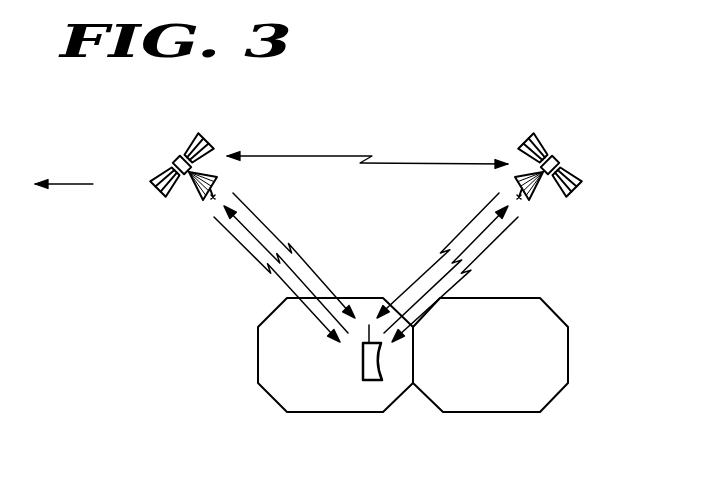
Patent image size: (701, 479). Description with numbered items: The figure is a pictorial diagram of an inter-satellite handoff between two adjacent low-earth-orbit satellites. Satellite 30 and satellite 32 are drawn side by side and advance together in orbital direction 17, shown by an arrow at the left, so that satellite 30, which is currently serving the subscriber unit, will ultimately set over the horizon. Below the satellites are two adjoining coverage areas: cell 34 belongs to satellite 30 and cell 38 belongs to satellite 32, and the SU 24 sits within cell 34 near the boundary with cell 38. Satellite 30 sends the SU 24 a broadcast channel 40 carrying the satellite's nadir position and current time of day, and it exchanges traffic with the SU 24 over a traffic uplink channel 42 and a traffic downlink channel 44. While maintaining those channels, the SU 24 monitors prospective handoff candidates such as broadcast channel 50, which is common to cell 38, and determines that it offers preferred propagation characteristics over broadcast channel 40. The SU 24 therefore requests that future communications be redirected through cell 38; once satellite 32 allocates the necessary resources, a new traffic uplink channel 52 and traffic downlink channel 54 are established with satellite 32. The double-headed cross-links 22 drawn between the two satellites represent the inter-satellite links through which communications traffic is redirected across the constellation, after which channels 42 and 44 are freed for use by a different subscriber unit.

The orbital direction 17 is at (73, 184).
The cross-links 22 is at (333, 155).
The SU 24 is at (363, 365).
The satellite 30 is at (165, 153).
The satellite 32 is at (568, 153).
The cell 34 is at (327, 413).
The cell 38 is at (498, 413).
The broadcast channel 40 is at (267, 223).
The traffic uplink channel 42 is at (300, 287).
The traffic downlink channel 44 is at (250, 249).
The broadcast channel 50 is at (468, 225).
The traffic uplink channel 52 is at (430, 287).
The traffic downlink channel 54 is at (487, 247).